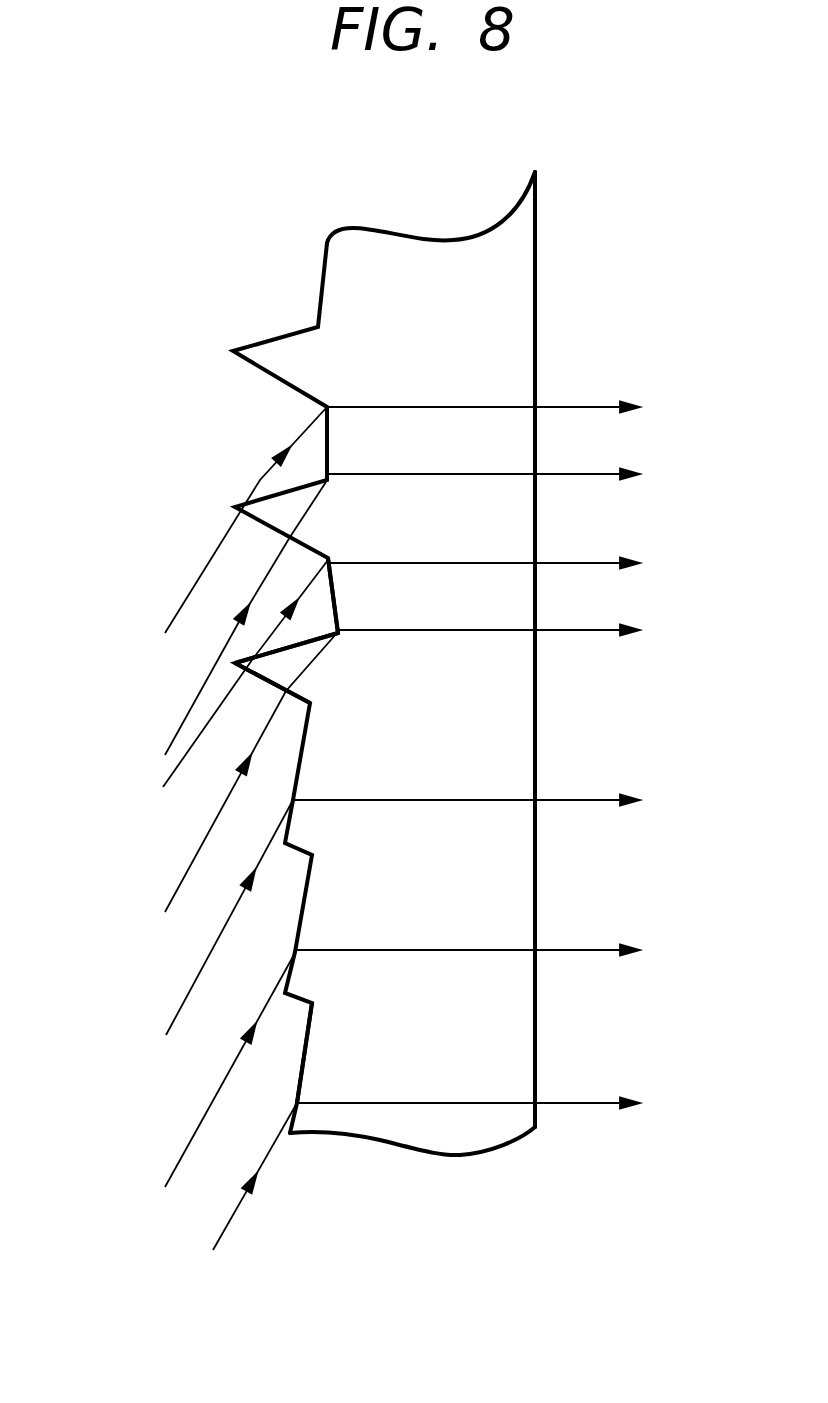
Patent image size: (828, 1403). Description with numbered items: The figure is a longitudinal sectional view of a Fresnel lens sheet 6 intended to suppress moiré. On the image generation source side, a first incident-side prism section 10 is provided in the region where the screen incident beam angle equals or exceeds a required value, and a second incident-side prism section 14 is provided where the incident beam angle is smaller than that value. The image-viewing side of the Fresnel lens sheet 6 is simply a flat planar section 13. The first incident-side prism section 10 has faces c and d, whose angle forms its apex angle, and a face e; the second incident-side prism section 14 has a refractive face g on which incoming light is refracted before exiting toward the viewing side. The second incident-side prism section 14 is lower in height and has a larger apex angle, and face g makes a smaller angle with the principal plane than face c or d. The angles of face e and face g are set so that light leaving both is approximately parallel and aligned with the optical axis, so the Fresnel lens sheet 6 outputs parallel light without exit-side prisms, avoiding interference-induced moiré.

The Fresnel lens sheet 6 is at (425, 253).
The first incident-side prism section 10 is at (275, 347).
The planar section 13 is at (535, 713).
The second incident-side prism section 14 is at (317, 1087).
The face e is at (330, 590).
The face d is at (258, 655).
The face c is at (258, 675).
The refractive face g is at (300, 1068).